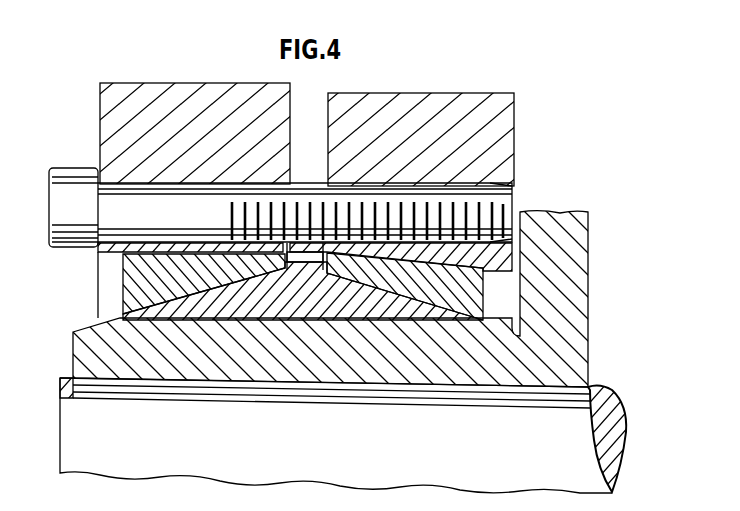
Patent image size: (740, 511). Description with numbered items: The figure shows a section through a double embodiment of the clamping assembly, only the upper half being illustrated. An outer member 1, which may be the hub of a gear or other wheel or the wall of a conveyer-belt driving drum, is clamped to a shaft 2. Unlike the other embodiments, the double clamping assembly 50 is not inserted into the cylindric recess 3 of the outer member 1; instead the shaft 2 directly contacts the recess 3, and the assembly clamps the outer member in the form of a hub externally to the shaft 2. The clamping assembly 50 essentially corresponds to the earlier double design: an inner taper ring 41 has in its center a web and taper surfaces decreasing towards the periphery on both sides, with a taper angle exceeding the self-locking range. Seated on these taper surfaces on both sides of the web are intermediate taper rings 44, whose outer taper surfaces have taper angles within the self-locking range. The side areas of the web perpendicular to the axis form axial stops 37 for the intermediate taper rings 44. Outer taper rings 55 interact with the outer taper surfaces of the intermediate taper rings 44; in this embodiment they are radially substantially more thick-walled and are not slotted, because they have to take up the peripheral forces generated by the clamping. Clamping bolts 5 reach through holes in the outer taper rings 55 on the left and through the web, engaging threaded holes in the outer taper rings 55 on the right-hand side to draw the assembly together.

The outer member 1 is at (92, 345).
The shaft 2 is at (87, 415).
The cylindric recess 3 is at (503, 390).
The clamping bolts 5 is at (62, 220).
The axial stops 37 is at (325, 253).
The inner taper ring 41 is at (203, 303).
The intermediate taper rings 44 is at (140, 274).
The double clamping assembly 50 is at (599, 162).
The outer taper rings 55 is at (120, 120).